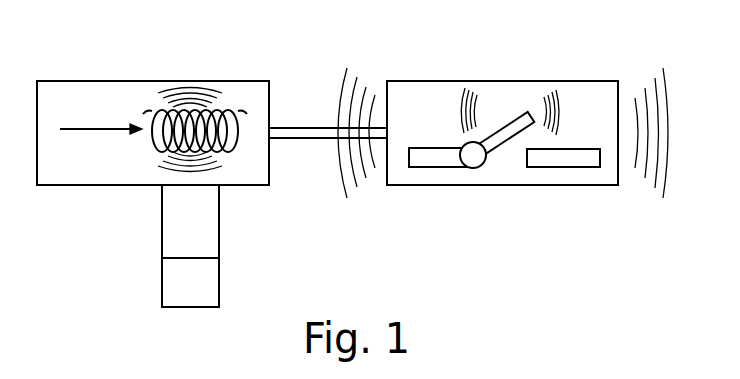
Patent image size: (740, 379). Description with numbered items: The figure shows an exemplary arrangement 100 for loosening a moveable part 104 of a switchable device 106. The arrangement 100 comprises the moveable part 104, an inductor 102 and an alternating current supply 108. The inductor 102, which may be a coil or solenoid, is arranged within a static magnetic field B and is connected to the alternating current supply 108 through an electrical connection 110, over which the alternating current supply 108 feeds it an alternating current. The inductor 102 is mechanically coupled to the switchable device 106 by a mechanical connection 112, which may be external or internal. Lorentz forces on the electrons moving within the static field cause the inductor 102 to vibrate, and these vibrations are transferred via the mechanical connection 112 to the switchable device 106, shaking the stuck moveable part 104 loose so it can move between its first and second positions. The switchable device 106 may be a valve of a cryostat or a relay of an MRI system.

The arrangement 100 is at (437, 55).
The inductor 102 is at (227, 98).
The moveable part 104 is at (516, 110).
The switchable device 106 is at (604, 81).
The alternating current supply 108 is at (162, 277).
The electrical connection 110 is at (162, 225).
The mechanical connection 112 is at (297, 128).